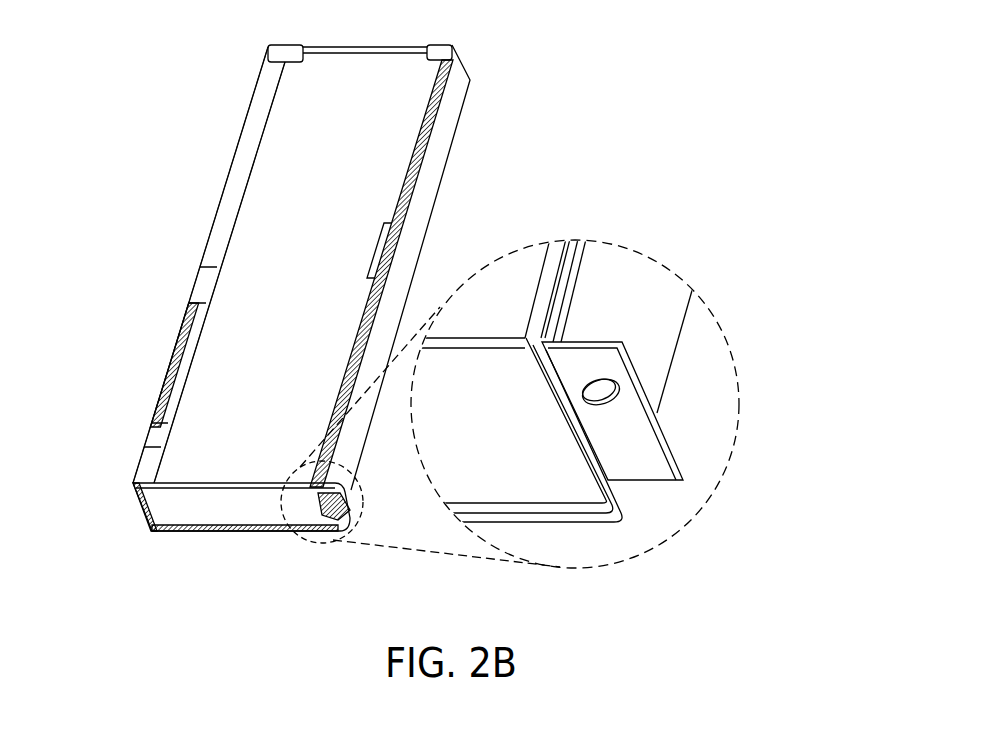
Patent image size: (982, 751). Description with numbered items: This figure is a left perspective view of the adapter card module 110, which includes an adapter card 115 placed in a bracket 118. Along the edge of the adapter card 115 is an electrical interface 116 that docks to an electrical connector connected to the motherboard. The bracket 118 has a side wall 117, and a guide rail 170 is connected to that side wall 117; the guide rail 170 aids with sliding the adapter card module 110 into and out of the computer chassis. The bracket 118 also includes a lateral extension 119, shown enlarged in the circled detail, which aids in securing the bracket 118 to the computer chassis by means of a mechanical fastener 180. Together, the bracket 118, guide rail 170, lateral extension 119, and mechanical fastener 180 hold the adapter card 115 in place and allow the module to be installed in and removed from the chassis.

The adapter card module 110 is at (175, 162).
The adapter card 115 is at (190, 462).
The electrical interface 116 is at (177, 330).
The side wall 117 is at (552, 293).
The bracket 118 is at (253, 100).
The lateral extension 119 is at (680, 467).
The guide rail 170 is at (452, 103).
The mechanical fastener 180 is at (316, 527).